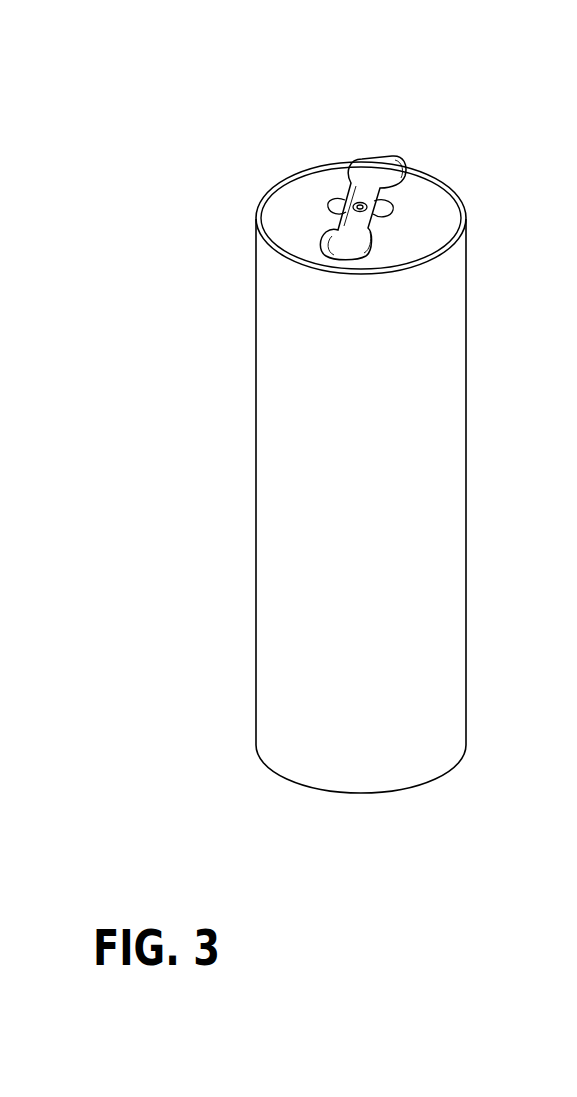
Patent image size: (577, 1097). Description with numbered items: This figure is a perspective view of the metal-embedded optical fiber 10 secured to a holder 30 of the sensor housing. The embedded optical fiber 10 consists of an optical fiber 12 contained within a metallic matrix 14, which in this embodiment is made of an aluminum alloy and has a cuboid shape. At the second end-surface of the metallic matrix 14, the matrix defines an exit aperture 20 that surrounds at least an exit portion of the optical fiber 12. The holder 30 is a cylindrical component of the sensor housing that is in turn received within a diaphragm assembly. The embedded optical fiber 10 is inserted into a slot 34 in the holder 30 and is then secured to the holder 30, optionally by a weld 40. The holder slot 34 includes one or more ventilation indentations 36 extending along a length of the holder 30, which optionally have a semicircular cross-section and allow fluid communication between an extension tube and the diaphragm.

The embedded optical fiber 10 is at (333, 197).
The optical fiber 12 is at (360, 162).
The metallic matrix 14 is at (348, 224).
The exit aperture 20 is at (368, 206).
The holder 30 is at (310, 433).
The slot 34 is at (335, 212).
The ventilation indentation 36 is at (385, 212).
The weld 40 is at (327, 245).